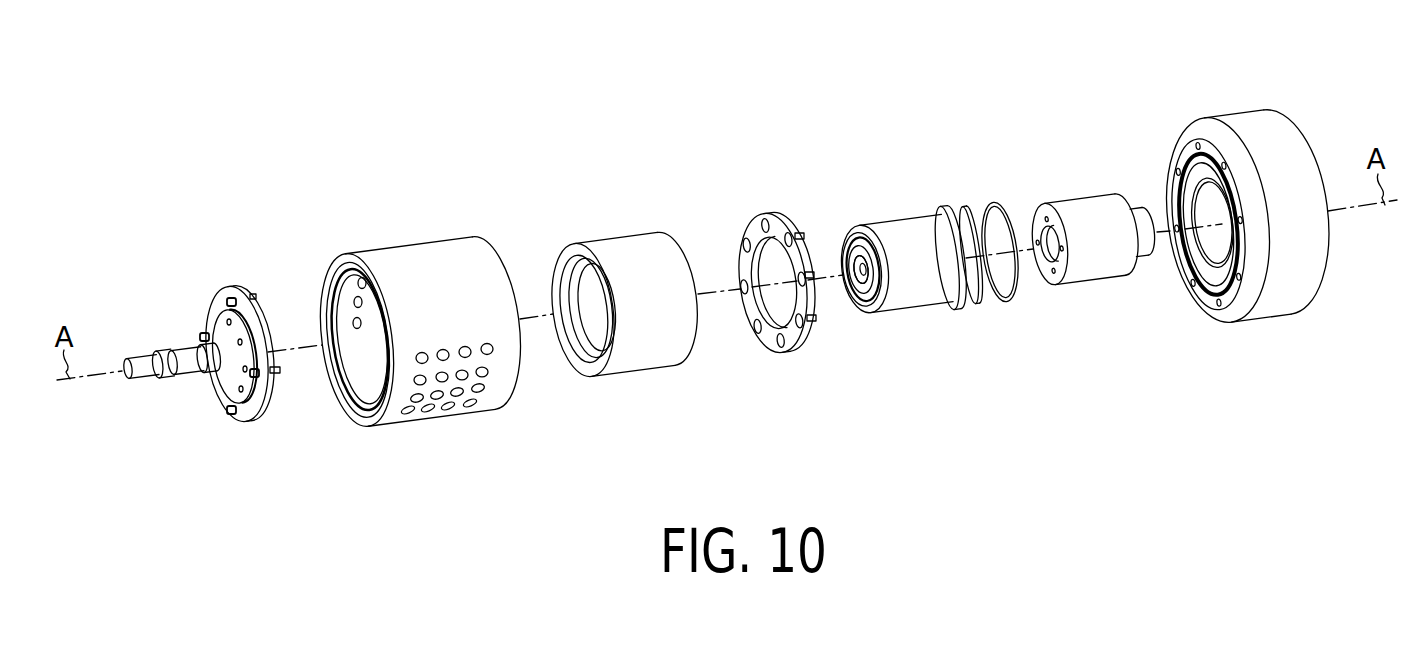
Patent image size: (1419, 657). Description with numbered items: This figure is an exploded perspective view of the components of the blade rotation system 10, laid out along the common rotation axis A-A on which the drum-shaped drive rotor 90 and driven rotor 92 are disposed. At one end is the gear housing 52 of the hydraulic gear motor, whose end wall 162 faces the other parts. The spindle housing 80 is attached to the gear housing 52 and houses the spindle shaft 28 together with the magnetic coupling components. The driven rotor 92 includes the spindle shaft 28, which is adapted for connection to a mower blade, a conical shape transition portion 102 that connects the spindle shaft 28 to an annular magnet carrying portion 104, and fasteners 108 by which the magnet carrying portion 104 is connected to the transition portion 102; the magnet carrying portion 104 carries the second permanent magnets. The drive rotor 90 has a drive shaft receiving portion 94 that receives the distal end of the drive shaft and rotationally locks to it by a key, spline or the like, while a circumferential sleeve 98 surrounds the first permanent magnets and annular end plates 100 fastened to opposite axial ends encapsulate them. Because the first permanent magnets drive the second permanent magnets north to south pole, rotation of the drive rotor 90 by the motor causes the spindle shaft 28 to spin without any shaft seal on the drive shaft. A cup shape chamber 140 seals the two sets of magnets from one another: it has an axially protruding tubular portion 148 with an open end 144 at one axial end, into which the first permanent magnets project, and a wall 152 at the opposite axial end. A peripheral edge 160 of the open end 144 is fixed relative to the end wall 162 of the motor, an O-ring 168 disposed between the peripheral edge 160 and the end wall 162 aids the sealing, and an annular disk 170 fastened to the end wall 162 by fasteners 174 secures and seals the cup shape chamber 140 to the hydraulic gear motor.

The blade rotation system 10 is at (187, 176).
The spindle shaft 28 is at (150, 358).
The gear housing 52 is at (1213, 127).
The spindle housing 80 is at (418, 243).
The drive rotor 90 is at (1052, 172).
The driven rotor 92 is at (568, 218).
The drive shaft receiving portion 94 is at (1147, 207).
The circumferential sleeve 98 is at (1102, 208).
The end plates 100 is at (1045, 287).
The conical shape transition portion 102 is at (228, 378).
The annular magnet carrying portion 104 is at (608, 237).
The fasteners 108 is at (276, 374).
The cup shape chamber 140 is at (896, 202).
The open end 144 is at (981, 303).
The tubular portion 148 is at (873, 320).
The wall 152 is at (858, 315).
The peripheral edge 160 is at (977, 303).
The end wall 162 is at (1195, 293).
The O-ring 168 is at (1003, 304).
The annular disk 170 is at (778, 218).
The fasteners 174 is at (798, 235).